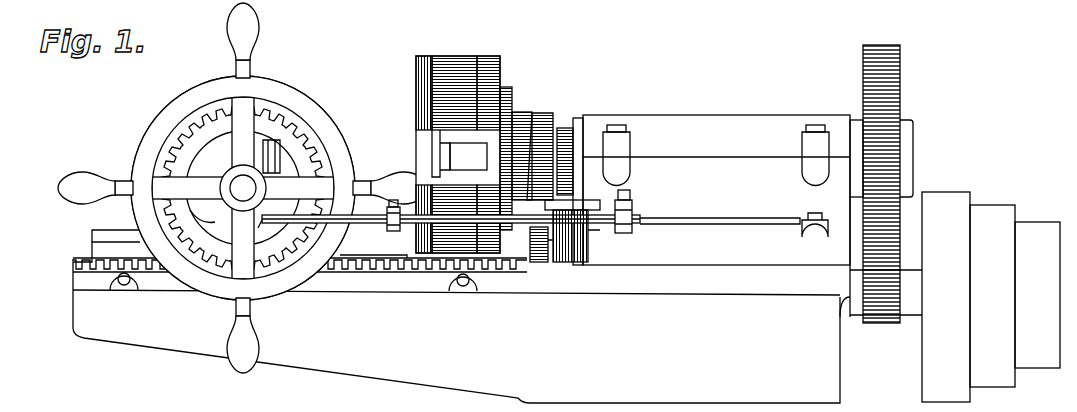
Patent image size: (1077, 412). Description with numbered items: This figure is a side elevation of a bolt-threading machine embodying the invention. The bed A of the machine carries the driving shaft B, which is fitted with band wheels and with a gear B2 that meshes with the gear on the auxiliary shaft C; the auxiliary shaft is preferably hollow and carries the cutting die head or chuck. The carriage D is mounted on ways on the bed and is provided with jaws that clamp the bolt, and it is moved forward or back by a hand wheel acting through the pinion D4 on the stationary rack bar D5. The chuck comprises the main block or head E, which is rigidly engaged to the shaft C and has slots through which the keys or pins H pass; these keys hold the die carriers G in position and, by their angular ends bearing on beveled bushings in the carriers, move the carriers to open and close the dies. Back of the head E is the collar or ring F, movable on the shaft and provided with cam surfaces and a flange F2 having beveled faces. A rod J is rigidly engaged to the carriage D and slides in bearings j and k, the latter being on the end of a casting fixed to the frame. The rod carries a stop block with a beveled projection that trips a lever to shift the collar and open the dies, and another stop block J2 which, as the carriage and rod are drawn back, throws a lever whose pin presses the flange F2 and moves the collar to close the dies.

The bed A is at (456, 316).
The driving shaft B is at (907, 310).
The gear B2 is at (868, 312).
The auxiliary shaft C is at (560, 137).
The carriage D is at (227, 235).
The pinion D4 is at (300, 140).
The stationary rack bar D5 is at (380, 268).
The main block or head of the chuck E is at (480, 90).
The collar or ring F is at (522, 118).
The flange F2 is at (533, 140).
The die carriers G is at (435, 153).
The keys or pins H is at (508, 95).
The rod J is at (545, 225).
The stop block J2 is at (633, 205).
The bearing j is at (249, 233).
The bearing k is at (580, 235).